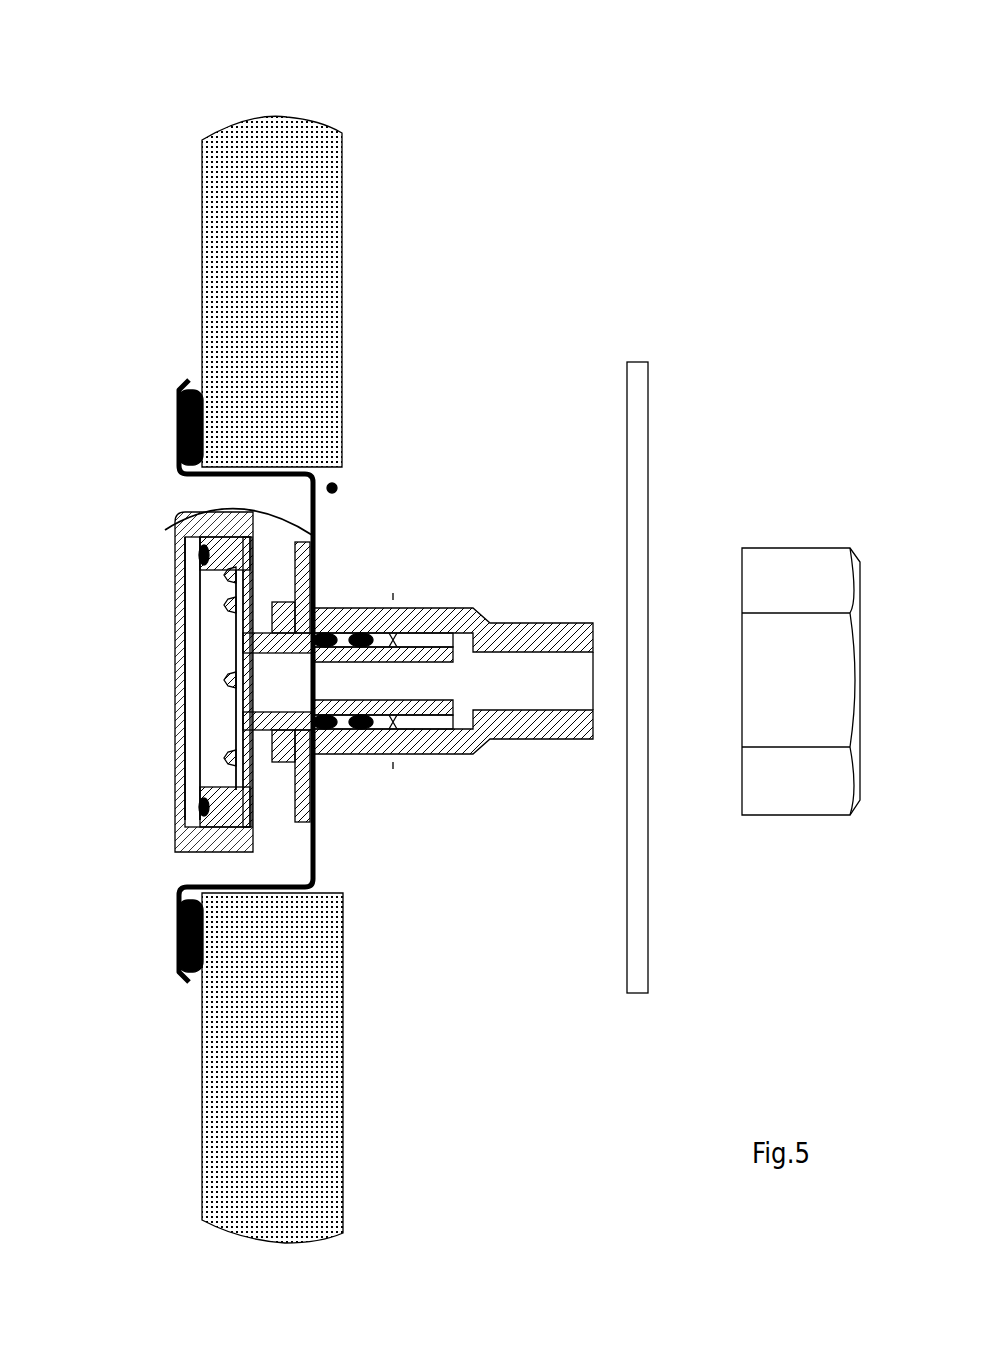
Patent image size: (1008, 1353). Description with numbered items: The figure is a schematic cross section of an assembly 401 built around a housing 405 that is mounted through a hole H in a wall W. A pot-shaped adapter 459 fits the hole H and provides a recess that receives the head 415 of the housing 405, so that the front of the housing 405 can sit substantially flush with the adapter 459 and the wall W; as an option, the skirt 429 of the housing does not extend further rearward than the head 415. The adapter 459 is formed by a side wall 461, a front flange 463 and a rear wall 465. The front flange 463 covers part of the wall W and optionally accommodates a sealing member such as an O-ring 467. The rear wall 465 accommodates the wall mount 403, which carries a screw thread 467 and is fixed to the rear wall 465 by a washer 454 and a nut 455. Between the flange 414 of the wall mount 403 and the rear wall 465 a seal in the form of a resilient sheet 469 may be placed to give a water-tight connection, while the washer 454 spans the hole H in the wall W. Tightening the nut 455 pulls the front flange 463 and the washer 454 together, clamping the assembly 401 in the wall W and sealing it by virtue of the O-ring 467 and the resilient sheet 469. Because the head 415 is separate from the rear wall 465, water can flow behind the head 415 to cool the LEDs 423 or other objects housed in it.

The assembly 401 is at (737, 222).
The wall mount 403 is at (437, 613).
The housing 405 is at (166, 674).
The flange 414 is at (307, 803).
The head 415 is at (248, 803).
The LEDs 423 is at (222, 762).
The skirt 429 is at (203, 840).
The washer 454 is at (635, 535).
The nut 455 is at (788, 573).
The adapter 459 is at (205, 882).
The side wall 461 is at (193, 477).
The front flange 463 is at (177, 393).
The rear wall 465 is at (317, 837).
The O-ring 467 is at (372, 597).
The resilient sheet 469 is at (237, 497).
The wall W is at (298, 225).
The hole H is at (338, 484).